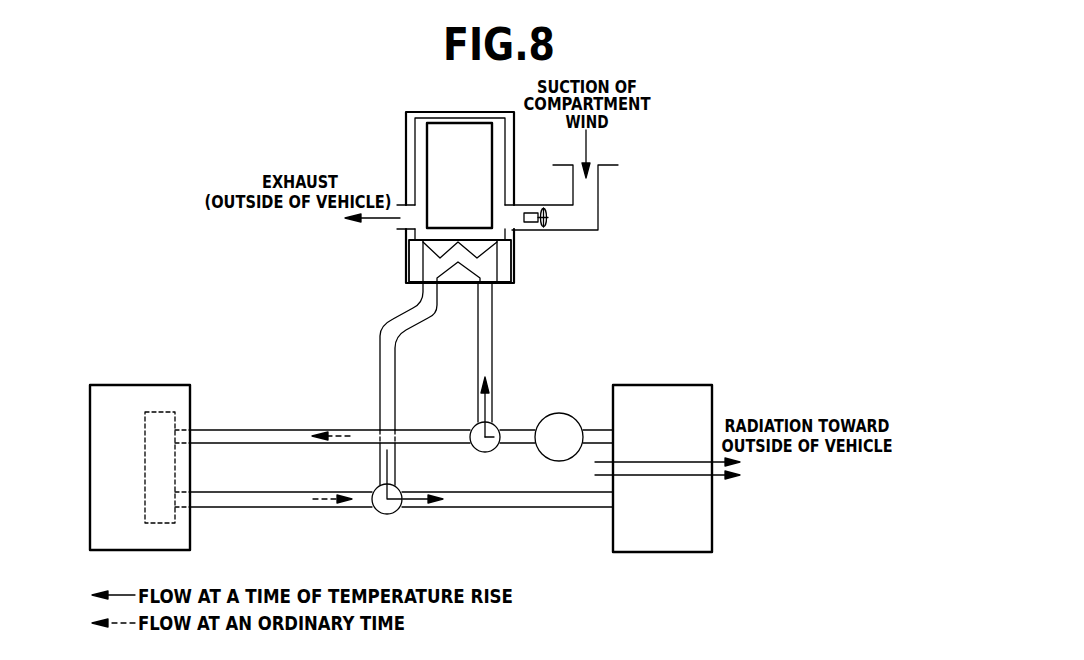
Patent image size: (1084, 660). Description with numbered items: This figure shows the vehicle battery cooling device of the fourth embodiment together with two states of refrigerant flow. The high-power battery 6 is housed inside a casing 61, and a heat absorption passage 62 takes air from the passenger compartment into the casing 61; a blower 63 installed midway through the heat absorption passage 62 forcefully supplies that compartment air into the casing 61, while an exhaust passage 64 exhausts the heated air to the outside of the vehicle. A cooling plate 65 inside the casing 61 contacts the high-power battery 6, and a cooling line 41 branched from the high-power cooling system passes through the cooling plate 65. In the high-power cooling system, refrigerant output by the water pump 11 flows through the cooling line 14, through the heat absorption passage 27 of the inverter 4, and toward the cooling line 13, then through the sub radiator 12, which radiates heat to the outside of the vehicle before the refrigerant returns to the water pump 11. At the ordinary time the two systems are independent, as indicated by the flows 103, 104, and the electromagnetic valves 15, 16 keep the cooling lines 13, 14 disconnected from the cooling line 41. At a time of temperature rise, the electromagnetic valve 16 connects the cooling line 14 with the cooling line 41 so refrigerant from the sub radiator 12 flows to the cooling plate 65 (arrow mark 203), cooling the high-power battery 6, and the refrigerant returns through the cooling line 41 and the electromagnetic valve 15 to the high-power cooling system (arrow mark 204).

The casing 61 is at (404, 130).
The high-power battery 6 is at (426, 165).
The blower 63 is at (533, 208).
The heat absorption passage 62 is at (599, 187).
The exhaust passage 64 is at (404, 237).
The cooling plate 65 is at (514, 257).
The cooling line 41 is at (380, 362).
The inverter 4 is at (135, 385).
The heat absorption passage 27 is at (165, 412).
The cooling line 14 is at (239, 430).
The cooling line 13 is at (240, 509).
The arrow mark 203 is at (478, 405).
The electromagnetic valve 16 is at (500, 426).
The water pump 11 is at (558, 413).
The flow 103 is at (337, 440).
The arrow mark 204 is at (390, 467).
The flow 104 is at (327, 503).
The electromagnetic valve 15 is at (387, 515).
The sub radiator 12 is at (663, 553).